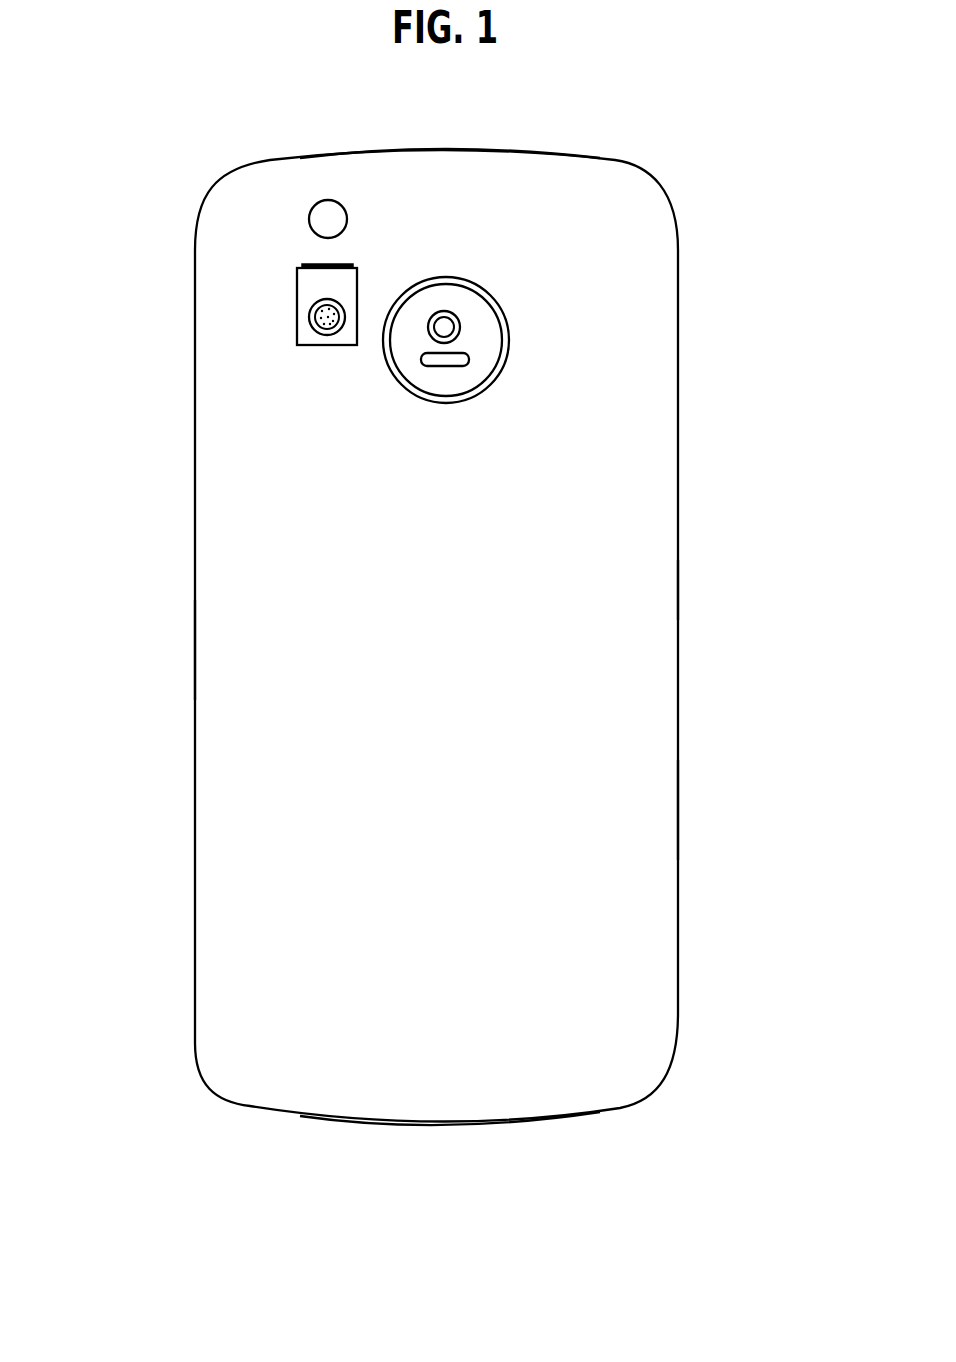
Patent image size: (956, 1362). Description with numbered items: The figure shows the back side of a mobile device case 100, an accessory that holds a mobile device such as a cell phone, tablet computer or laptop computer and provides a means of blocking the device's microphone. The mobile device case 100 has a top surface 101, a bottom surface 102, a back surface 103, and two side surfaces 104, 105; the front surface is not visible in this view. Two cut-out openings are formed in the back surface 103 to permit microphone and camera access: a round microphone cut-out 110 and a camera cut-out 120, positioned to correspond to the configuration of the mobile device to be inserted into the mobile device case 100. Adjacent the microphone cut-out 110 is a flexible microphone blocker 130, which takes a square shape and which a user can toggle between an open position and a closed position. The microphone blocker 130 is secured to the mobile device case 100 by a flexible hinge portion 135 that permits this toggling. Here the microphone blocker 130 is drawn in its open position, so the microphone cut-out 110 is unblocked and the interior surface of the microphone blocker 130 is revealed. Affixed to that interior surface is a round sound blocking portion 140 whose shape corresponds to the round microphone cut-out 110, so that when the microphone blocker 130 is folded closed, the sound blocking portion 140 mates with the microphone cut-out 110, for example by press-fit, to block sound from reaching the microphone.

The mobile device case 100 is at (188, 200).
The top surface 101 is at (573, 147).
The bottom surface 102 is at (390, 1128).
The back surface 103 is at (615, 603).
The side surface 104 is at (173, 646).
The side surface 105 is at (700, 805).
The microphone cut-out 110 is at (330, 222).
The camera cut-out 120 is at (476, 322).
The microphone blocker 130 is at (293, 348).
The flexible hinge portion 135 is at (347, 258).
The sound blocking portion 140 is at (322, 332).